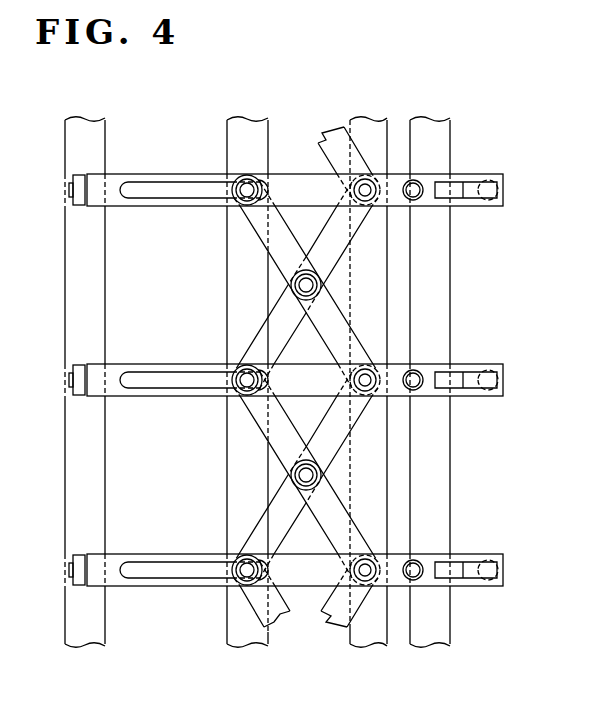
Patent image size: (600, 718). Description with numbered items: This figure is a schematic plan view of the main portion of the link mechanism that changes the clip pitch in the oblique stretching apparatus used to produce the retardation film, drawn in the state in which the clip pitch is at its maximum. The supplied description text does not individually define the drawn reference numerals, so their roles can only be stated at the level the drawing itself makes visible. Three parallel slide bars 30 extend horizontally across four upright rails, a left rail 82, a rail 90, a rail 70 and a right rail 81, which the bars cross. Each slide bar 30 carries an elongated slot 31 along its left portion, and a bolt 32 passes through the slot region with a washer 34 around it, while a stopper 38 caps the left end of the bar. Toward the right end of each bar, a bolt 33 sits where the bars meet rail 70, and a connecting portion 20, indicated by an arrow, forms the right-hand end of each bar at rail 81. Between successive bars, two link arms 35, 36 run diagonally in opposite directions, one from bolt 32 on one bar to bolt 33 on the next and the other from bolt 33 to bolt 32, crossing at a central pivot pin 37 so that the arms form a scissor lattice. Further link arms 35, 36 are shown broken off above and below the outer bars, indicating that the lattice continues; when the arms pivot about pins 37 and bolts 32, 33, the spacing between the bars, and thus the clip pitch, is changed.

The connecting portion 20 is at (464, 163).
The slide bar 30 is at (143, 206).
The slot 31 is at (152, 182).
The bolt 32 is at (238, 176).
The bolt 33 is at (366, 176).
The washer 34 is at (236, 202).
The link arm 35 is at (358, 342).
The link arm 36 is at (358, 230).
The pivot pin 37 is at (305, 300).
The stopper 38 is at (80, 207).
The support post 70 is at (378, 634).
The post 81 is at (442, 620).
The post 82 is at (87, 644).
The post 90 is at (248, 644).